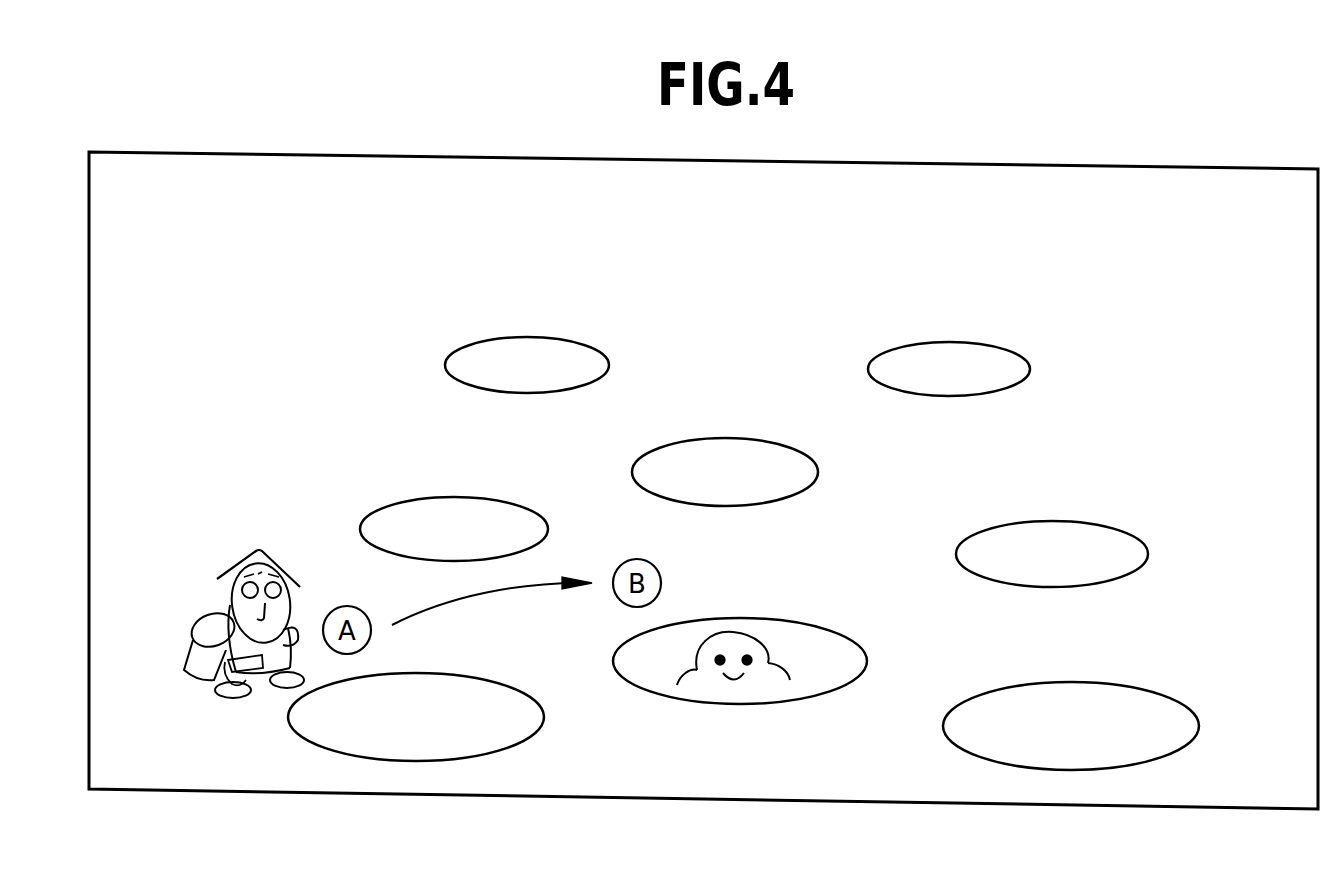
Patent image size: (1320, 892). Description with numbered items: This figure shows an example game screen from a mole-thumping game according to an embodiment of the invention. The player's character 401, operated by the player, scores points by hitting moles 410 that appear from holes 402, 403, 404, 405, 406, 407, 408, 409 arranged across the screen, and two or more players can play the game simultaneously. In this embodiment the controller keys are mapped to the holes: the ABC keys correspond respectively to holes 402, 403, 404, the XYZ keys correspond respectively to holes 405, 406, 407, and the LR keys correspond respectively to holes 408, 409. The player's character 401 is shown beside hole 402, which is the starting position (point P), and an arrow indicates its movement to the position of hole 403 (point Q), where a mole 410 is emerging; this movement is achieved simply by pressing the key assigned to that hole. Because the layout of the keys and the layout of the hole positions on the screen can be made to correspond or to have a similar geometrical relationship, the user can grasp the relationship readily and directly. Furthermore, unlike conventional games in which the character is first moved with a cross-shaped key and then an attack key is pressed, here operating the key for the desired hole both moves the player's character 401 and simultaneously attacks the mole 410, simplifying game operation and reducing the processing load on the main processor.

The player's character 401 is at (242, 557).
The hole 402 is at (422, 762).
The hole 403 is at (748, 705).
The hole 404 is at (1093, 770).
The hole 405 is at (452, 497).
The hole 406 is at (723, 438).
The hole 407 is at (1062, 522).
The hole 408 is at (537, 337).
The hole 409 is at (960, 342).
The mole 410 is at (753, 650).